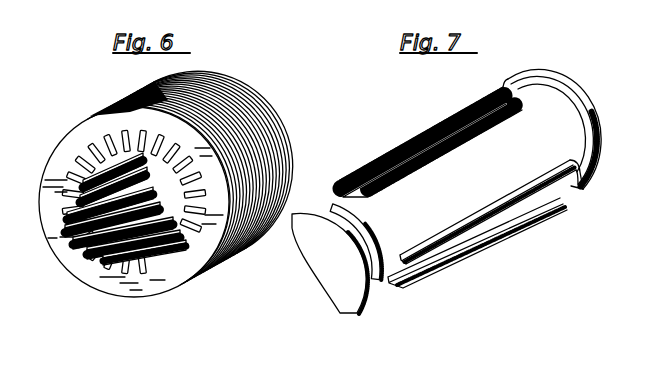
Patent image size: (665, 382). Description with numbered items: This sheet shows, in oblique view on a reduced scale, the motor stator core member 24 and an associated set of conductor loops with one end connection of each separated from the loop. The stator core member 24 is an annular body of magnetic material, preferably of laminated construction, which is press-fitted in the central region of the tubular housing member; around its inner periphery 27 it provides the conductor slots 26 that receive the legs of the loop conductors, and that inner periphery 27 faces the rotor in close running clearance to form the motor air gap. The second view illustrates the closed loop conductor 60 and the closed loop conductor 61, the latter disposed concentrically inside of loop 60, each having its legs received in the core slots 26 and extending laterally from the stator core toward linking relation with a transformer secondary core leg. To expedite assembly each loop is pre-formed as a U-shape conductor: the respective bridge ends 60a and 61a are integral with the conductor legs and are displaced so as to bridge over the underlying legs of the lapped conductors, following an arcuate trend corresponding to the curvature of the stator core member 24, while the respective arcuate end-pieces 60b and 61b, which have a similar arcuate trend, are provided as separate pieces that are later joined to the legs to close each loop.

In FIG. 6, the motor stator core member 24 is at (257, 116).
In FIG. 6, the conductor slots 26 is at (140, 264).
In FIG. 6, the inner periphery 27 is at (66, 243).
In FIG. 7, the closed loop conductor 60 is at (537, 208).
In FIG. 7, the bridge end of loop conductor 60a is at (578, 111).
In FIG. 7, the arcuate end-piece of loop conductor 60b is at (363, 304).
In FIG. 7, the closed loop conductor 61 is at (522, 189).
In FIG. 7, the bridge end of loop conductor 61a is at (572, 136).
In FIG. 7, the arcuate end-piece of loop conductor 61b is at (373, 229).